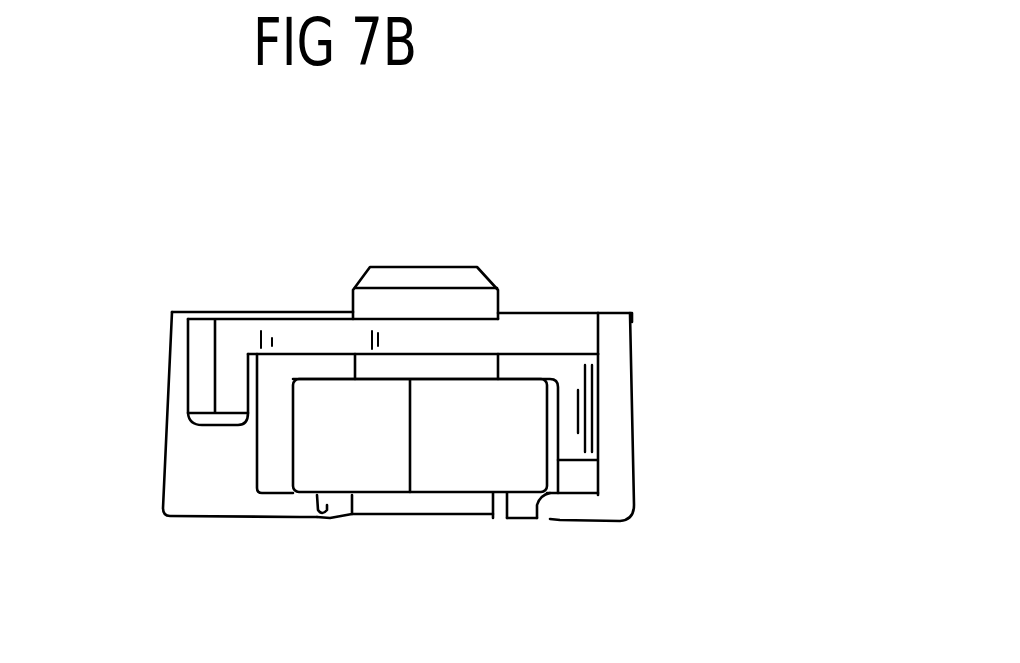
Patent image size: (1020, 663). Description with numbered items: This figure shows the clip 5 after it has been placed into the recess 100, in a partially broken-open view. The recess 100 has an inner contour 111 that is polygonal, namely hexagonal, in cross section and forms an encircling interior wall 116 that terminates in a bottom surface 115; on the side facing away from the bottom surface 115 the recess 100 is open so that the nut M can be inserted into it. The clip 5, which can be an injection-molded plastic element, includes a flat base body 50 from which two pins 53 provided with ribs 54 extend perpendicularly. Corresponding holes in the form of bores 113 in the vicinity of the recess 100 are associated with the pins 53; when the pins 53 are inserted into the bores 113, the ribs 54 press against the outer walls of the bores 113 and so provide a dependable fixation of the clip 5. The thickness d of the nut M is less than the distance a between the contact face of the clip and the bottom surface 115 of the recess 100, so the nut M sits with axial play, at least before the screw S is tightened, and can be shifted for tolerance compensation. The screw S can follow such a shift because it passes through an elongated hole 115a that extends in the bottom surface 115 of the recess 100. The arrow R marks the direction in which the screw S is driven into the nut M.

The clip 5 is at (298, 311).
The pin 53 is at (200, 383).
The rib 54 is at (215, 375).
The flat base body 50 is at (528, 330).
The screw S is at (472, 303).
The actuation direction R is at (425, 148).
The inner contour 111 is at (605, 315).
The bore 113 is at (585, 403).
The recess 100 is at (600, 473).
The bottom surface 115 is at (575, 485).
The interior wall 116 is at (253, 455).
The elongated hole 115a is at (322, 507).
The nut M is at (502, 460).
The thickness of the nut d is at (459, 383).
The distance a is at (275, 357).